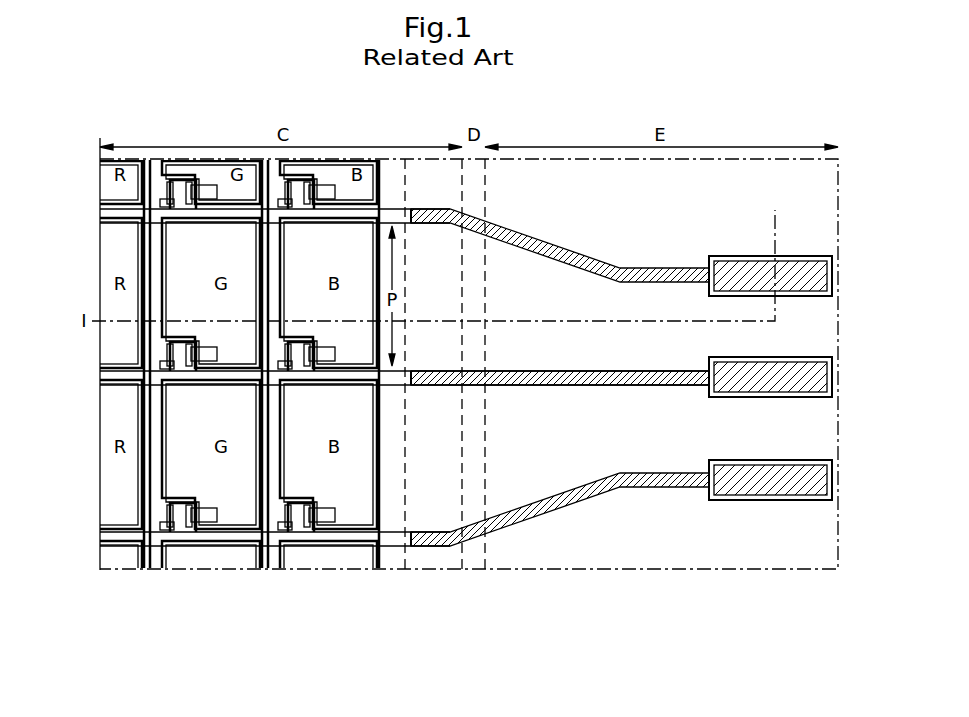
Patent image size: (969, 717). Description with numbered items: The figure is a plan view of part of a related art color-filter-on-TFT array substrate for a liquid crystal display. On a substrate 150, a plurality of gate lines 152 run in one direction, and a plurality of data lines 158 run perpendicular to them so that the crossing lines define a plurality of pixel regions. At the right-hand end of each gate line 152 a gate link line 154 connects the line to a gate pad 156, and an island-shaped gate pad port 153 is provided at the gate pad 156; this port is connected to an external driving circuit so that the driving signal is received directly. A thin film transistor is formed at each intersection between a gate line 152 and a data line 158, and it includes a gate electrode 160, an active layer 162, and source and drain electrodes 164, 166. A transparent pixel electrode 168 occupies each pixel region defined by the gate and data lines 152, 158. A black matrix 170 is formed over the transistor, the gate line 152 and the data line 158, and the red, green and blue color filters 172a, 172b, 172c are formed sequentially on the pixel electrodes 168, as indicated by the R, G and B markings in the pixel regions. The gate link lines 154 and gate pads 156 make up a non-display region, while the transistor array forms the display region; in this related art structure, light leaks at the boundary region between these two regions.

The substrate 150 is at (838, 365).
The gate line 152 is at (392, 552).
The gate pad port 153 is at (832, 478).
The gate link line 154 is at (558, 512).
The gate pad 156 is at (764, 502).
The data line 158 is at (152, 257).
The gate electrode 160 is at (186, 529).
The active layer 162 is at (180, 534).
The source electrode 164 is at (159, 534).
The drain electrode 166 is at (208, 523).
The transparent pixel electrode 168 is at (386, 447).
The black matrix 170 is at (143, 158).
The red color filter 172a is at (172, 302).
The green color filter 172b is at (107, 340).
The blue color filter 172c is at (331, 230).